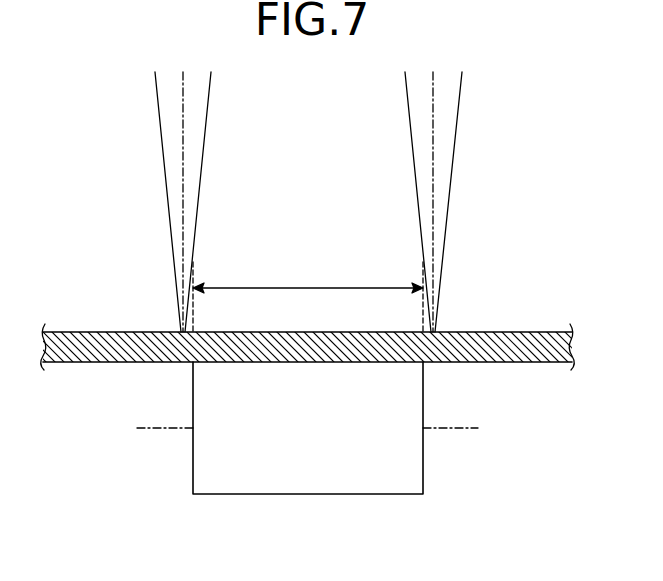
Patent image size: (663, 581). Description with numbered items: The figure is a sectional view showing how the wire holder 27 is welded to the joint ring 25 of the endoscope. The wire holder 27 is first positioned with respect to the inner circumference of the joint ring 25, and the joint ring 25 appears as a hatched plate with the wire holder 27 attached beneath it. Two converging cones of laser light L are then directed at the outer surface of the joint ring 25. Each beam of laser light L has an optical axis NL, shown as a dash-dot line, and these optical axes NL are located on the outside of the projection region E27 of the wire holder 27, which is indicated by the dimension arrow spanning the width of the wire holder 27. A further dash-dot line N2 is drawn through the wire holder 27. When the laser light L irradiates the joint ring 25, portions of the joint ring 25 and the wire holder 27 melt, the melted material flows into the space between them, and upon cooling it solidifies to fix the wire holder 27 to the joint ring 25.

The joint ring 25 is at (513, 332).
The wire holder 27 is at (424, 466).
The center axis of block 27 N2 is at (461, 426).
The laser light L is at (208, 128).
The optical axis of the laser light NL is at (490, 158).
The projection region of the wire holder E27 is at (308, 295).